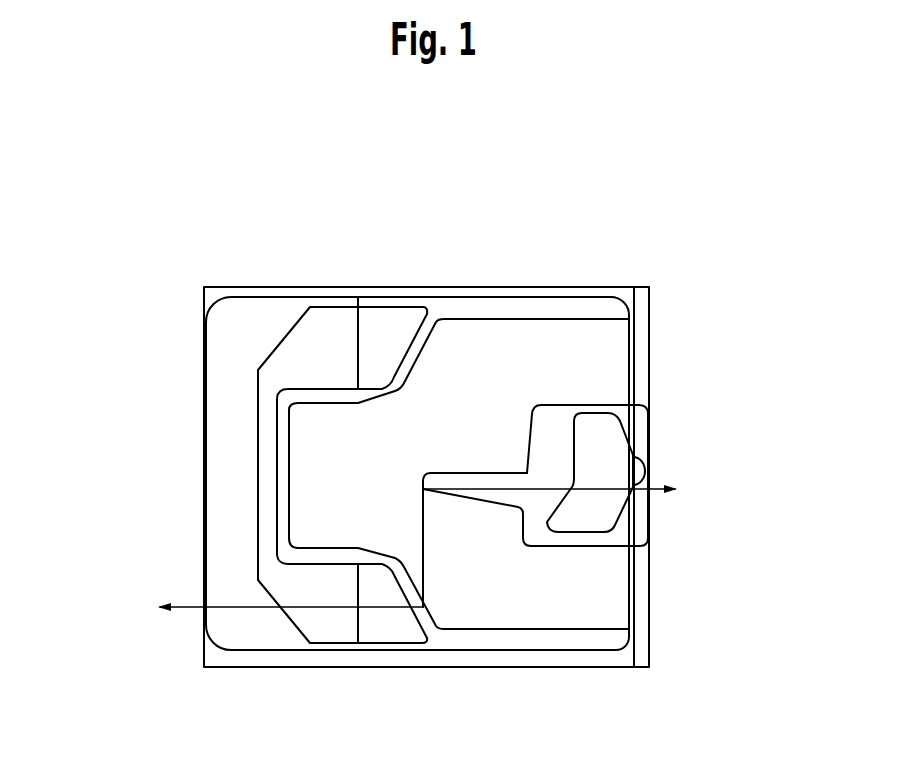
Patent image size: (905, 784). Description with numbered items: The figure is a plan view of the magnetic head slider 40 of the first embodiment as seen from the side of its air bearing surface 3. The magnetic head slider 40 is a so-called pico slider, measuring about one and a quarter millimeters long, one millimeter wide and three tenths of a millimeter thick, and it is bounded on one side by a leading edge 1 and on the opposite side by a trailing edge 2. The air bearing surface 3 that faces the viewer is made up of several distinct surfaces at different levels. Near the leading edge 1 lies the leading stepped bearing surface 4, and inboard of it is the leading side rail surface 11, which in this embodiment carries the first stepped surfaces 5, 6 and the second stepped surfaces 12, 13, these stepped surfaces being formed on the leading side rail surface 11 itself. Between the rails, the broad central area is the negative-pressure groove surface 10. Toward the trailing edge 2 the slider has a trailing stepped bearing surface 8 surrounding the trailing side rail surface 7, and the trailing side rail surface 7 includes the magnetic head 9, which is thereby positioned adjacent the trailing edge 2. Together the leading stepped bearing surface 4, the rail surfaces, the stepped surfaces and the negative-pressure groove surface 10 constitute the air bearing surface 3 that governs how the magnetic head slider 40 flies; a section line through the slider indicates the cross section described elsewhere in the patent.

The leading edge 1 is at (203, 441).
The trailing edge 2 is at (650, 593).
The air bearing surface 3 is at (465, 362).
The leading stepped bearing surface 4 is at (230, 516).
The first stepped surface 5 is at (343, 337).
The first stepped surface 6 is at (343, 612).
The trailing side rail surface 7 is at (610, 458).
The trailing stepped bearing surface 8 is at (555, 430).
The magnetic head 9 is at (648, 472).
The negative-pressure groove surface 10 is at (488, 387).
The leading side rail surface 11 is at (287, 360).
The second stepped surface 12 is at (393, 620).
The second stepped surface 13 is at (392, 325).
The magnetic head slider 40 is at (638, 162).